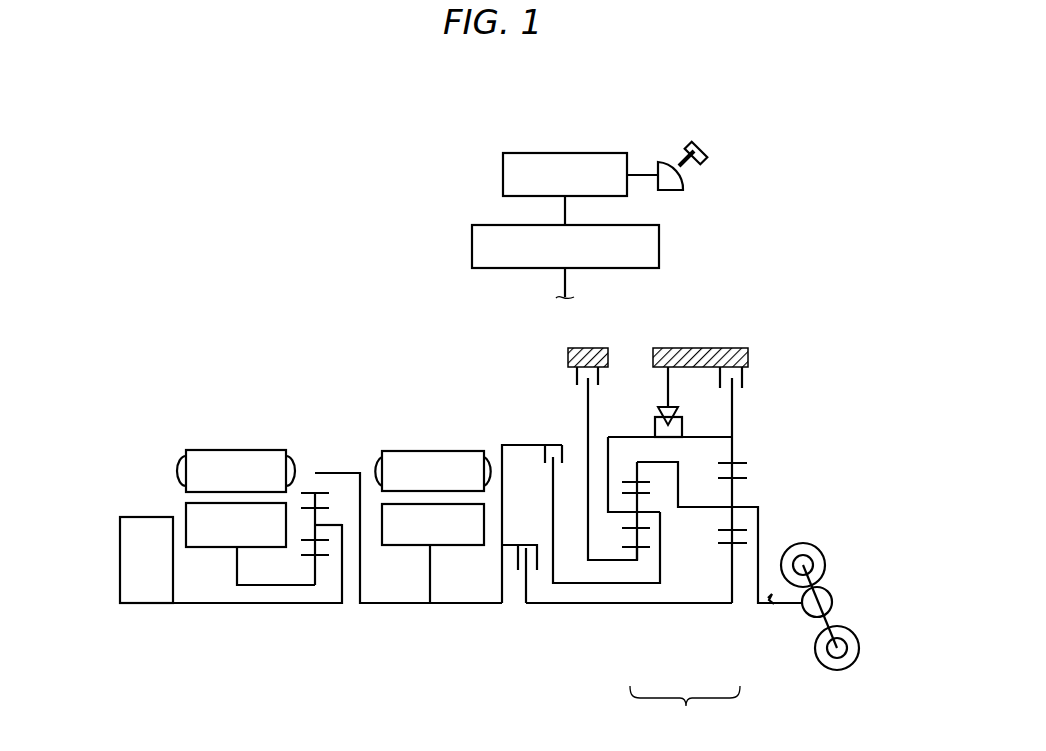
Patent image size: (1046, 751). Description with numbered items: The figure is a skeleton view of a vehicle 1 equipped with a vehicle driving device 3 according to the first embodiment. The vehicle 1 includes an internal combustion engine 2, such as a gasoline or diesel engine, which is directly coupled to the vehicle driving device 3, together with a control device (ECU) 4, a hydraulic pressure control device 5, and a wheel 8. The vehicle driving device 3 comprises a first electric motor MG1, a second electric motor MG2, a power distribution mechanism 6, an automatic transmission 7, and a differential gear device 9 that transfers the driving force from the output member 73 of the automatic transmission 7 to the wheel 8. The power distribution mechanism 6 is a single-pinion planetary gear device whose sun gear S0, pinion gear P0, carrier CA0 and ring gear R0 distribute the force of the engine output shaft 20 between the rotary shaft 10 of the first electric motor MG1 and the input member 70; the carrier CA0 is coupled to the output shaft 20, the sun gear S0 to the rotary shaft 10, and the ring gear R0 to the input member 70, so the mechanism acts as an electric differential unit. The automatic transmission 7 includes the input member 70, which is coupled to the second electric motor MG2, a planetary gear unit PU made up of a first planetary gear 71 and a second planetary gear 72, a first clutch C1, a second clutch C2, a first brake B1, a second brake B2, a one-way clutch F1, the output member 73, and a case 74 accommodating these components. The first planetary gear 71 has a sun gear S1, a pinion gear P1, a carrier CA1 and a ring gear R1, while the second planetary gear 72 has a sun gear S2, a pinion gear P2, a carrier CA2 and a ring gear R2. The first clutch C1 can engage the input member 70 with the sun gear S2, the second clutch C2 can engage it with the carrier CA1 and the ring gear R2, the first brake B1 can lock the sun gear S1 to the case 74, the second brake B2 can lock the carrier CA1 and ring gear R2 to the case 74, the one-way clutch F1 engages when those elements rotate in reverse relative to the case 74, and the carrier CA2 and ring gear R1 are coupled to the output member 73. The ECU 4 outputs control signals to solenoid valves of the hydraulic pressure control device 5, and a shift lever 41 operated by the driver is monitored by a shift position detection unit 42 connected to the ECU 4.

The vehicle 1 is at (318, 168).
The internal combustion engine 2 is at (143, 502).
The vehicle driving device 3 is at (317, 310).
The control device (ECU) 4 is at (503, 176).
The hydraulic pressure control device 5 is at (472, 246).
The power distribution mechanism 6 is at (318, 427).
The automatic transmission 7 is at (521, 383).
The wheel 8 is at (808, 545).
The differential gear device 9 is at (830, 586).
The rotary shaft 10 is at (285, 586).
The output shaft 20 is at (215, 604).
The shift lever 41 is at (692, 148).
The shift position detection unit 42 is at (668, 193).
The input member 70 is at (463, 604).
The first planetary gear 71 is at (636, 613).
The second planetary gear 72 is at (728, 613).
The output member 73 is at (770, 606).
The case 74 is at (655, 348).
The first electric motor MG1 is at (217, 418).
The second electric motor MG2 is at (425, 420).
The ring gear R0 is at (303, 492).
The sun gear S0 is at (321, 556).
The carrier CA0 is at (340, 522).
The pinion gear P0 is at (301, 541).
The first clutch C1 is at (527, 545).
The second clutch C2 is at (549, 443).
The first brake B1 is at (577, 379).
The second brake B2 is at (747, 379).
The one-way clutch F1 is at (653, 423).
The ring gear R1 is at (628, 482).
The sun gear S1 is at (630, 548).
The pinion gear P1 is at (650, 495).
The carrier CA1 is at (662, 528).
The ring gear R2 is at (737, 463).
The pinion gear P2 is at (738, 476).
The carrier CA2 is at (736, 507).
The sun gear S2 is at (729, 548).
The planetary gear unit PU is at (685, 710).